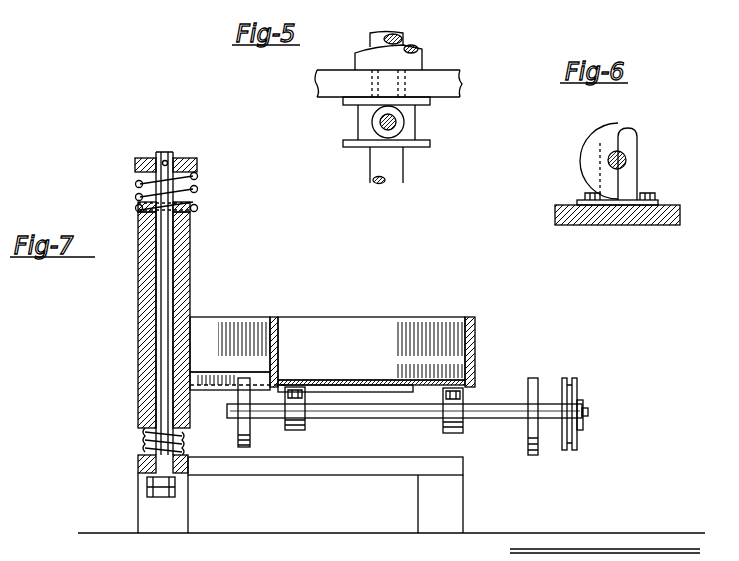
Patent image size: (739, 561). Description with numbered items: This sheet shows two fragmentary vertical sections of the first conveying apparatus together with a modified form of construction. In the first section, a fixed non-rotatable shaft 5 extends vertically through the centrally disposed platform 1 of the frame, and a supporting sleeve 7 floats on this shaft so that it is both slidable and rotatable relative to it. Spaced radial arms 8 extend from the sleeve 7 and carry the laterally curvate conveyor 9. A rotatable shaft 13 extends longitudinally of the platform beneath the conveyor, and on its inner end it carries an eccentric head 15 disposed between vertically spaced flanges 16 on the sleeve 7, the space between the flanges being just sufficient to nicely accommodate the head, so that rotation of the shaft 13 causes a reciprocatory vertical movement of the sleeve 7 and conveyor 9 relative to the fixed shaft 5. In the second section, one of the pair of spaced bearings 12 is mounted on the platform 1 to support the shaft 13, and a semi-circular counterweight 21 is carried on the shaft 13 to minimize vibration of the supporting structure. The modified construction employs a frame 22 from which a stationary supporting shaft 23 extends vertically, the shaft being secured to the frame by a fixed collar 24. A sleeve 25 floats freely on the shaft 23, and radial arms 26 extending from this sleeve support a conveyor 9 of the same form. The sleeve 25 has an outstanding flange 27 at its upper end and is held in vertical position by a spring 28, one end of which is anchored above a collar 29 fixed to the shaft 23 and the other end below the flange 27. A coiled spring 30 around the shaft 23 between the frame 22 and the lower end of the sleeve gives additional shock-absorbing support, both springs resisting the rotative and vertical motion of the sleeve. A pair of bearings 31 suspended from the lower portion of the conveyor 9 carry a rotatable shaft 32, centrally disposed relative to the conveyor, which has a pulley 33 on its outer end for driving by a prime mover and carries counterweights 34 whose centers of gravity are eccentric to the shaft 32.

In FIG. 6, the platform 1 is at (630, 218).
In FIG. 5, the fixed non-rotatable shaft 5 is at (386, 42).
In FIG. 5, the supporting sleeve 7 is at (410, 60).
In FIG. 5, the radial arms 8 is at (328, 82).
In FIG. 7, the conveyor 9 is at (379, 309).
In FIG. 6, the bearings 12 is at (640, 182).
In FIG. 5, the shaft 13 is at (372, 122).
In FIG. 6, the shaft 13 is at (626, 157).
In FIG. 5, the eccentric head 15 is at (398, 118).
In FIG. 5, the flanges 16 is at (350, 100).
In FIG. 6, the counterweights 21 is at (600, 150).
In FIG. 7, the frame 22 is at (325, 465).
In FIG. 7, the stationary supporting shaft 23 is at (162, 263).
In FIG. 7, the fixed collar 24 is at (150, 488).
In FIG. 7, the sleeve 25 is at (183, 290).
In FIG. 7, the radial arms 26 is at (360, 392).
In FIG. 7, the outstanding flange 27 is at (195, 206).
In FIG. 7, the spring 28 is at (195, 185).
In FIG. 7, the collar 29 is at (180, 160).
In FIG. 7, the coiled spring 30 is at (150, 440).
In FIG. 7, the bearings 31 is at (300, 428).
In FIG. 7, the rotatable shaft 32 is at (395, 420).
In FIG. 7, the pulley 33 is at (575, 385).
In FIG. 7, the counterweights 34 is at (243, 448).